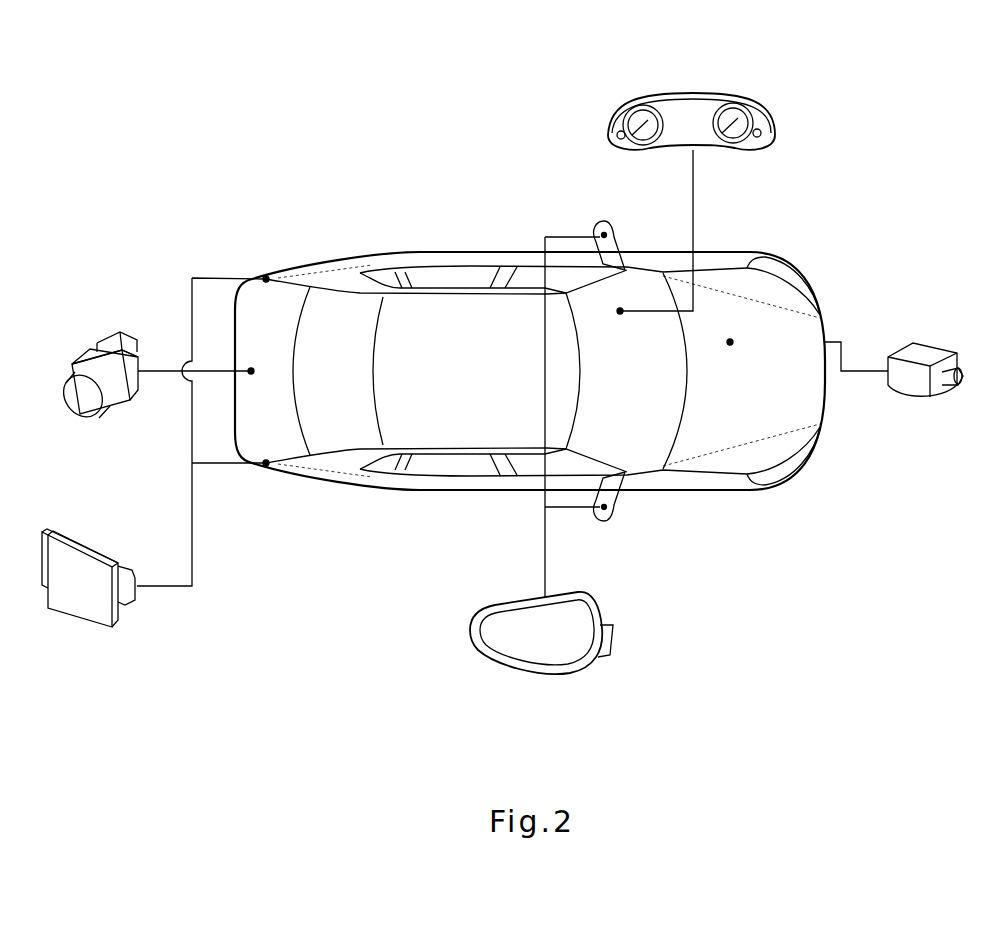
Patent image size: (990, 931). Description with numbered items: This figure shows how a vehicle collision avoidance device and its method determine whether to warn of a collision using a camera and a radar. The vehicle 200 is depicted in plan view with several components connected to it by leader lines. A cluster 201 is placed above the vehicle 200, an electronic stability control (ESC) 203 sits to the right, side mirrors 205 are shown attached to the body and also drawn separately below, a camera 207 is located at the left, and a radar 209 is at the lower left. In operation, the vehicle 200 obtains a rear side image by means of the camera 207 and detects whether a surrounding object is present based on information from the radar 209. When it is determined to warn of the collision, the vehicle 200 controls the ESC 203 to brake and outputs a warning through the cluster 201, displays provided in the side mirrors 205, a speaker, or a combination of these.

The vehicle 200 is at (462, 251).
The cluster 201 is at (693, 92).
The electronic stability control (ESC) 203 is at (935, 343).
The side mirrors 205 is at (533, 677).
The camera 207 is at (122, 332).
The radar 209 is at (88, 540).